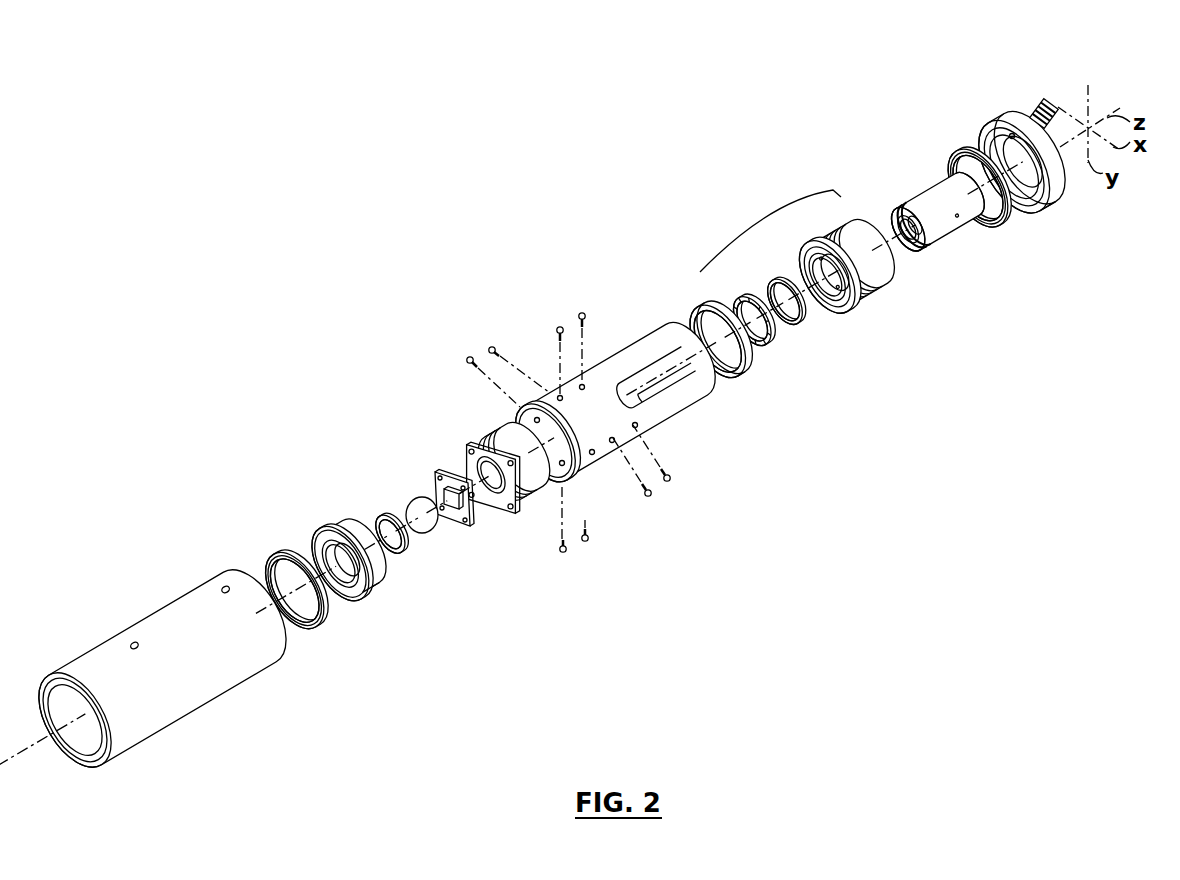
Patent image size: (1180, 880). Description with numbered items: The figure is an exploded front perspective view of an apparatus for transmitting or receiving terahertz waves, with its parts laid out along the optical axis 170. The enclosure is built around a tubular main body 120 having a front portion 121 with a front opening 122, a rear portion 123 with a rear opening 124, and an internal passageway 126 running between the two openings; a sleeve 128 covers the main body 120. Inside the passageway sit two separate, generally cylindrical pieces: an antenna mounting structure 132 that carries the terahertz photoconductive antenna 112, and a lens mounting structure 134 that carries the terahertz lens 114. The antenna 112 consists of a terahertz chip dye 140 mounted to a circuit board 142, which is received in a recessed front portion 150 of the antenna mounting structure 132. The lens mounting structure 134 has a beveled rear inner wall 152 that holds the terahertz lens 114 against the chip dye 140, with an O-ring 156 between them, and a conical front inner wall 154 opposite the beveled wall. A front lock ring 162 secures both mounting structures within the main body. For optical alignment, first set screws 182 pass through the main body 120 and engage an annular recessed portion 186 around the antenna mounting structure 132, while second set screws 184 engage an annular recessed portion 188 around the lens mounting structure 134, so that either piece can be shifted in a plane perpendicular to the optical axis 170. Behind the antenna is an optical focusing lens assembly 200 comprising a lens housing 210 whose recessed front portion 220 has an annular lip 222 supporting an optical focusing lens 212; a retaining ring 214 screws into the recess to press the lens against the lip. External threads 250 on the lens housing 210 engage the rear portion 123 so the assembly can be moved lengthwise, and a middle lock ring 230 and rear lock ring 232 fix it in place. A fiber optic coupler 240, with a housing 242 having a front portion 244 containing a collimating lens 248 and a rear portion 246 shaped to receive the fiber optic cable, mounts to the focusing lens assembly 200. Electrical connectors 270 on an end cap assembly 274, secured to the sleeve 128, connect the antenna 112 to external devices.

The terahertz photoconductive antenna 112 is at (432, 455).
The terahertz lens 114 is at (409, 505).
The tubular main body 120 is at (618, 387).
The front portion 121 is at (557, 455).
The front opening 122 is at (545, 503).
The rear portion 123 is at (586, 405).
The rear opening 124 is at (724, 384).
The internal passageway 126 is at (654, 379).
The sleeve 128 is at (155, 633).
The antenna mounting structure 132 is at (496, 447).
The lens mounting structure 134 is at (331, 543).
The terahertz chip dye 140 is at (447, 507).
The circuit board 142 is at (460, 527).
The recessed front portion 150 is at (482, 435).
The beveled rear inner wall 152 is at (337, 547).
The conical front inner wall 154 is at (343, 593).
The O-ring 156 is at (379, 520).
The front lock ring 162 is at (278, 553).
The optical axis 170 is at (17, 750).
The first set screws 182 is at (582, 313).
The second set screws 184 is at (558, 328).
The annular recessed portion 186 is at (505, 467).
The annular recessed portion 188 is at (344, 561).
The optical focusing lens assembly 200 is at (770, 231).
The lens housing 210 is at (872, 281).
The optical focusing lens 212 is at (800, 322).
The retaining ring 214 is at (765, 344).
The recessed front portion 220 is at (871, 289).
The annular lip 222 is at (827, 276).
The middle lock ring 230 is at (700, 300).
The rear lock ring 232 is at (968, 152).
The fiber optic coupler 240 is at (902, 196).
The housing 242 is at (933, 198).
The front portion 244 is at (936, 238).
The rear portion 246 is at (985, 212).
The collimating lens 248 is at (905, 257).
The external threads 250 is at (842, 267).
The electrical connectors 270 is at (1031, 117).
The end cap assembly 274 is at (1055, 197).